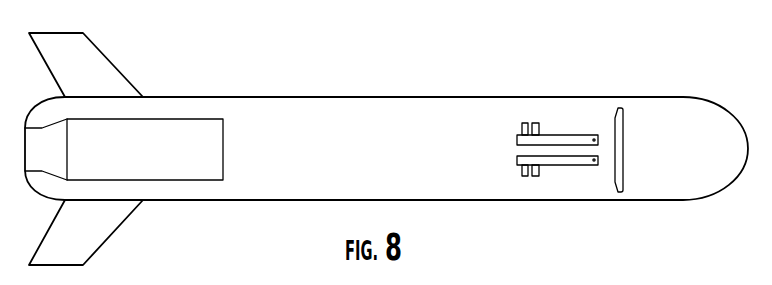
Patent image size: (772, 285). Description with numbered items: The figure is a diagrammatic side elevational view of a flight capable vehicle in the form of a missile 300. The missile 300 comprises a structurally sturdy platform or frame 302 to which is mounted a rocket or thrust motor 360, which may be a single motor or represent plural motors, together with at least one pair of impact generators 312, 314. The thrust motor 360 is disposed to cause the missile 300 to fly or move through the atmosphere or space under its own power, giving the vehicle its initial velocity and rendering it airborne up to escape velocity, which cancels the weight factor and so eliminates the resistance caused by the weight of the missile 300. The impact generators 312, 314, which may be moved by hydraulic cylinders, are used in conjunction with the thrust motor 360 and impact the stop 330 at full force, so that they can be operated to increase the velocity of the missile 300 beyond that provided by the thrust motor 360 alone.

The missile 300 is at (386, 136).
The frame 302 is at (303, 97).
The impact generator 312 is at (576, 118).
The impact generator 314 is at (575, 176).
The stop 330 is at (623, 145).
The thrust motor 360 is at (167, 160).